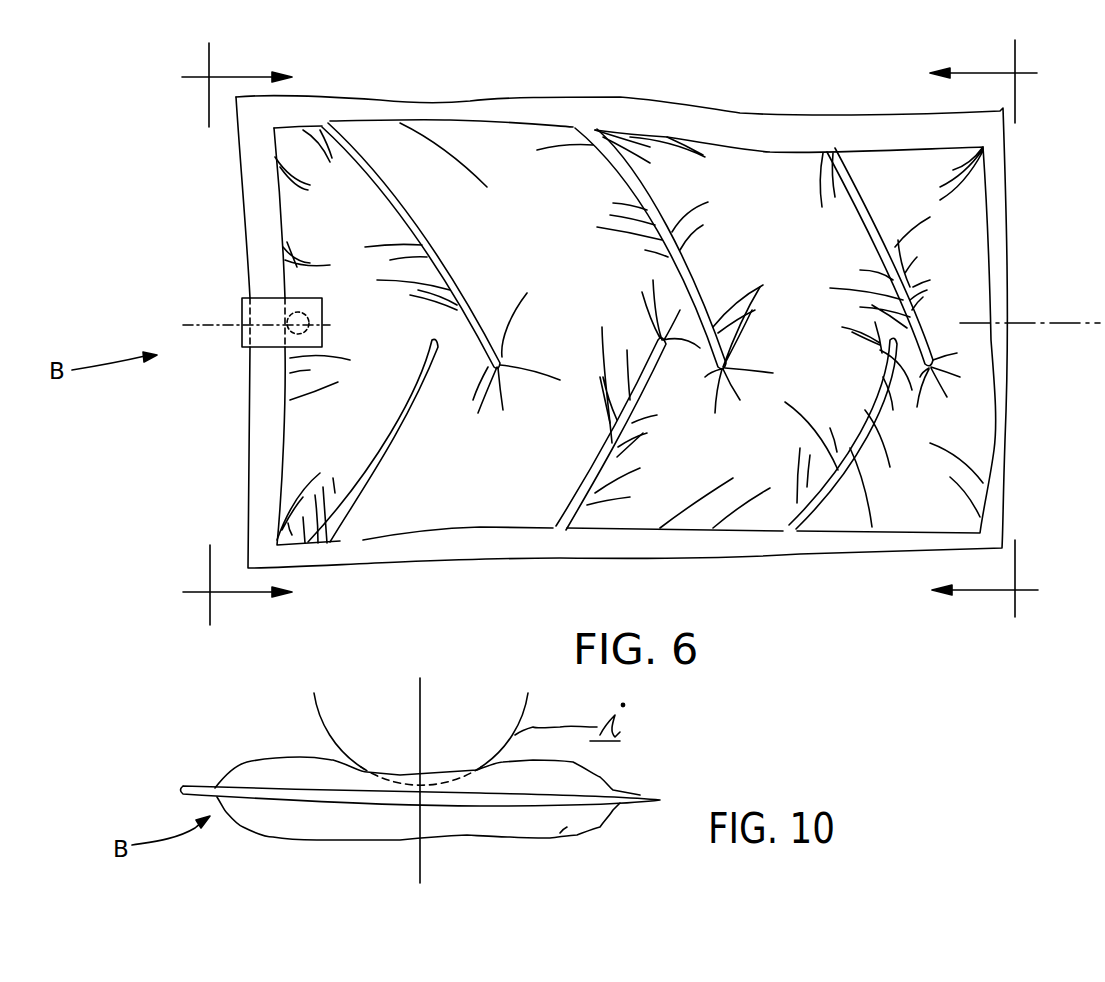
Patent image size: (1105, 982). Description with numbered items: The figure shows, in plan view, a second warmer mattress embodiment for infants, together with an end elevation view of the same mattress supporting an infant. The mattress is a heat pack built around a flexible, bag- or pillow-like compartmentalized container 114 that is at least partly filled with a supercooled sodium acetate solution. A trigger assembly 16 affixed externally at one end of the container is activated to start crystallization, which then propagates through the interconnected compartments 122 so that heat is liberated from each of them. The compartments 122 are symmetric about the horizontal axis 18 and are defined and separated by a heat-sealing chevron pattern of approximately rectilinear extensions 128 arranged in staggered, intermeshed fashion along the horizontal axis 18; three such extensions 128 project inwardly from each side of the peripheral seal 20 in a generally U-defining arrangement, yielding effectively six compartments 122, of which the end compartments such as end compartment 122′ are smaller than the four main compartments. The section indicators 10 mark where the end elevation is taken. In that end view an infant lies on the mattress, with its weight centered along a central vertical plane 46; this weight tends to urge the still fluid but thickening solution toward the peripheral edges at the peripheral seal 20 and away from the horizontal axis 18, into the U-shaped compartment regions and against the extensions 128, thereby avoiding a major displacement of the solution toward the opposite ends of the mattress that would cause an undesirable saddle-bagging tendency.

In FIG. 6, the section line for FIG. 10 is at (613, 332).
In FIG. 6, the compartmentalized container 114 is at (770, 114).
In FIG. 6, the peripheral seal 20 is at (567, 545).
In FIG. 10, the peripheral seal 20 is at (640, 797).
In FIG. 6, the trigger assembly 16 is at (262, 292).
In FIG. 6, the horizontal axis 18 is at (1063, 320).
In FIG. 6, the compartments 122 is at (510, 190).
In FIG. 6, the end compartment 122′ is at (335, 420).
In FIG. 10, the end compartment 122′ is at (295, 772).
In FIG. 6, the rectilinear extensions 128 is at (850, 448).
In FIG. 10, the central vertical plane 46 is at (420, 708).